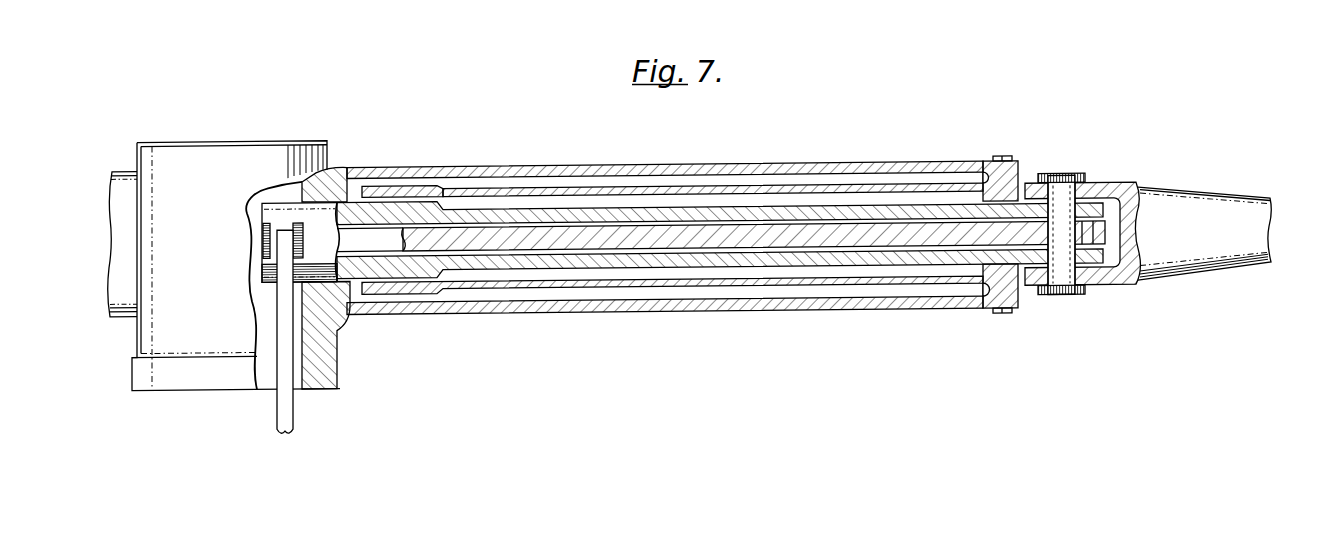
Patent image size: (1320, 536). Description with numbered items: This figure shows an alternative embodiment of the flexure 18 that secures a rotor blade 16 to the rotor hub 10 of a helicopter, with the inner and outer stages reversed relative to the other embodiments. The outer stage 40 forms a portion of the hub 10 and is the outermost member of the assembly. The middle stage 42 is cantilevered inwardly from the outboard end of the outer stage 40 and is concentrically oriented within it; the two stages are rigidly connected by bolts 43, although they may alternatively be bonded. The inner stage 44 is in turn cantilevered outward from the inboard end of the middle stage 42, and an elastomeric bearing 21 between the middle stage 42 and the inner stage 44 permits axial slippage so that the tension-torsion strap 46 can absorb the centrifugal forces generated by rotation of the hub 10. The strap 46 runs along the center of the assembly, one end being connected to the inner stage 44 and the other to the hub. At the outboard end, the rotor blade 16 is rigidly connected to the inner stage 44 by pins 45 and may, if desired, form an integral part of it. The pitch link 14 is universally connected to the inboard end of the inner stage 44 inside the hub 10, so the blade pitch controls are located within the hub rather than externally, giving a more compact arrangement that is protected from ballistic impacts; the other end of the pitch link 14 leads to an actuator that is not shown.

The hub 10 is at (178, 157).
The pitch link 14 is at (282, 412).
The rotor blade 16 is at (1207, 215).
The flexure 18 is at (637, 316).
The elastomeric bearing 21 is at (393, 197).
The outer stage 40 is at (112, 198).
The middle stage 42 is at (592, 190).
The bolts 43 is at (1002, 162).
The inner stage 44 is at (265, 216).
The pins 45 is at (1060, 194).
The tension-torsion strap 46 is at (723, 236).